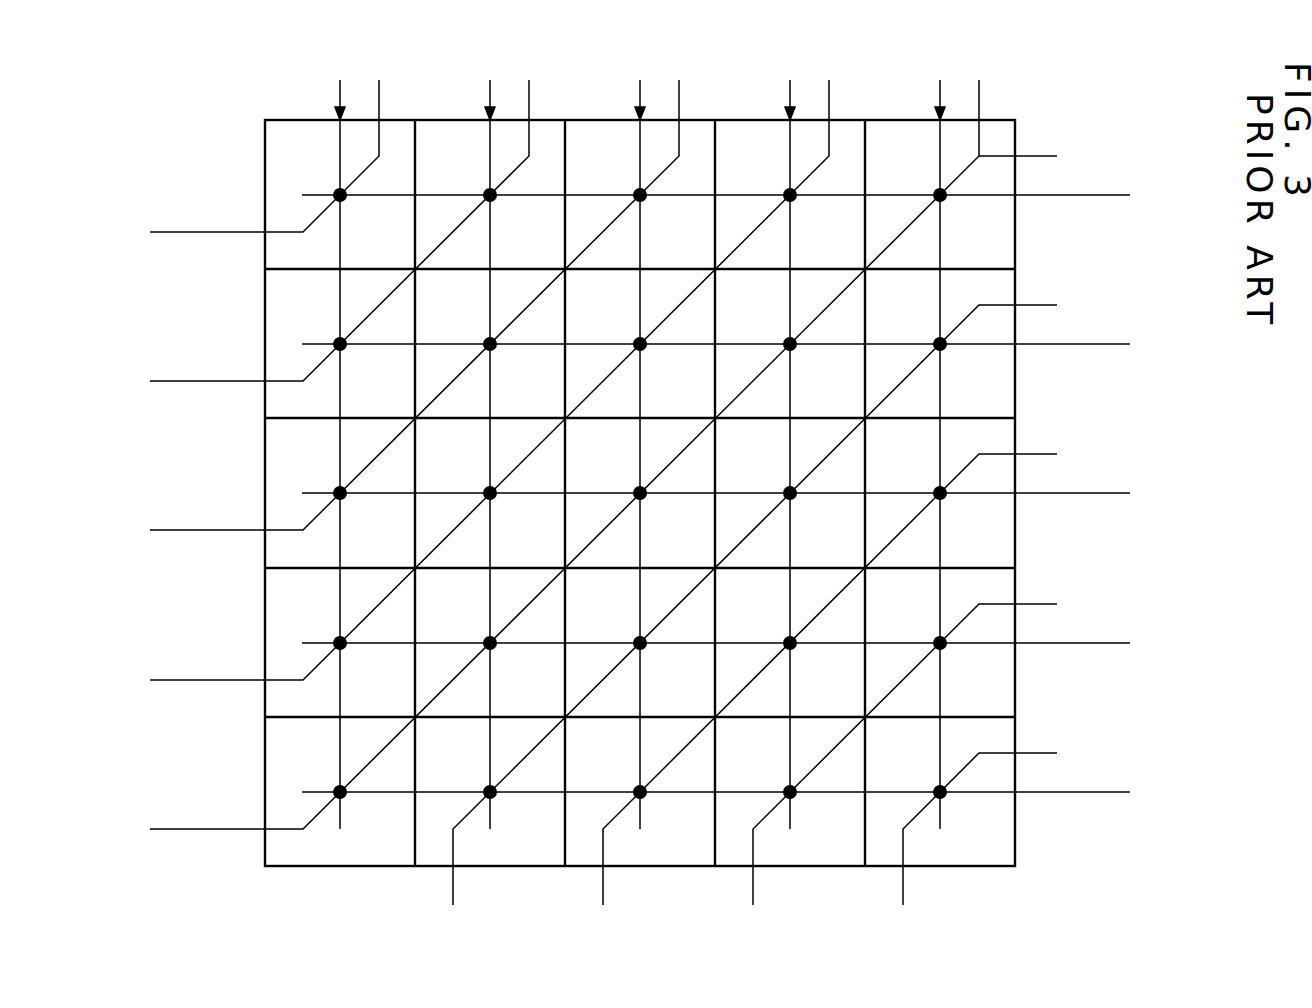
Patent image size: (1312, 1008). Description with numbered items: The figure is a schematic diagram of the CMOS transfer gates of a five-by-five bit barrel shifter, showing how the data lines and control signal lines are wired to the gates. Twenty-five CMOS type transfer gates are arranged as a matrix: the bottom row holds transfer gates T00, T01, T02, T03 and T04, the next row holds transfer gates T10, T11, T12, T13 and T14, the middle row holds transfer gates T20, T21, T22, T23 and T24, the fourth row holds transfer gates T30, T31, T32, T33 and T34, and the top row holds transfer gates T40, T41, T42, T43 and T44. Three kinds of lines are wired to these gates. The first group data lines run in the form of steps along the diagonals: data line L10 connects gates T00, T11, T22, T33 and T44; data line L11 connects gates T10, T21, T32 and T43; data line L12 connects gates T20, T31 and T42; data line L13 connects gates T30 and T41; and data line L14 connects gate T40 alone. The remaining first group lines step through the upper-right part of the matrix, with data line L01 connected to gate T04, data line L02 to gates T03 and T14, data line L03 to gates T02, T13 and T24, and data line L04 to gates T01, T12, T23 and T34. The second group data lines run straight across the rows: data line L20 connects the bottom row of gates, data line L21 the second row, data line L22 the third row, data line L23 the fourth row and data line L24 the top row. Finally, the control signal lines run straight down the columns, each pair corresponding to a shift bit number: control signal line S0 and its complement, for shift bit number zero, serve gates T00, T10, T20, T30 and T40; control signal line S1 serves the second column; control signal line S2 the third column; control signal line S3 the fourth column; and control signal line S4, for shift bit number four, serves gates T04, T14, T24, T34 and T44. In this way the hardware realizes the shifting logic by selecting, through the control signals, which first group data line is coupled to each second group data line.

The control signal line S0 is at (344, 435).
The control signal line S1 is at (494, 435).
The control signal line S2 is at (644, 435).
The control signal line S3 is at (794, 435).
The control signal line S4 is at (944, 435).
The first group data line L10 is at (606, 463).
The first group data line L11 is at (458, 389).
The first group data line L12 is at (383, 314).
The first group data line L13 is at (308, 239).
The first group data line L14 is at (233, 165).
The first group data line L01 is at (1014, 818).
The first group data line L02 is at (939, 743).
The first group data line L03 is at (864, 668).
The first group data line L04 is at (789, 594).
The second group data line L20 is at (751, 789).
The second group data line L21 is at (751, 640).
The second group data line L22 is at (751, 490).
The second group data line L23 is at (751, 341).
The second group data line L24 is at (751, 192).
The CMOS type transfer gate T00 is at (311, 763).
The CMOS type transfer gate T01 is at (461, 763).
The CMOS type transfer gate T02 is at (611, 763).
The CMOS type transfer gate T03 is at (761, 763).
The CMOS type transfer gate T04 is at (911, 763).
The CMOS type transfer gate T10 is at (311, 614).
The CMOS type transfer gate T11 is at (461, 614).
The CMOS type transfer gate T12 is at (611, 614).
The CMOS type transfer gate T13 is at (761, 614).
The CMOS type transfer gate T14 is at (911, 614).
The CMOS type transfer gate T20 is at (311, 464).
The CMOS type transfer gate T21 is at (461, 464).
The CMOS type transfer gate T22 is at (611, 464).
The CMOS type transfer gate T23 is at (761, 464).
The CMOS type transfer gate T24 is at (911, 464).
The CMOS type transfer gate T30 is at (311, 315).
The CMOS type transfer gate T31 is at (461, 315).
The CMOS type transfer gate T32 is at (611, 315).
The CMOS type transfer gate T33 is at (761, 315).
The CMOS type transfer gate T34 is at (911, 315).
The CMOS type transfer gate T40 is at (311, 166).
The CMOS type transfer gate T41 is at (461, 166).
The CMOS type transfer gate T42 is at (611, 166).
The CMOS type transfer gate T43 is at (761, 166).
The CMOS type transfer gate T44 is at (911, 166).